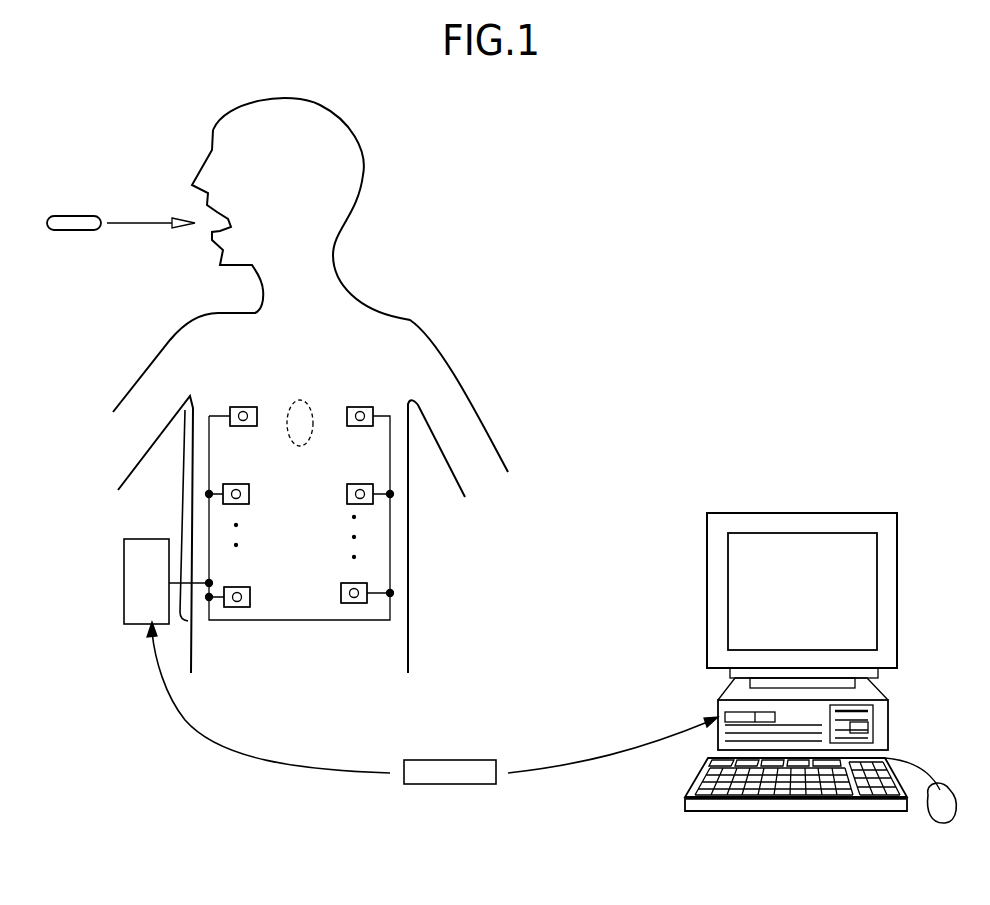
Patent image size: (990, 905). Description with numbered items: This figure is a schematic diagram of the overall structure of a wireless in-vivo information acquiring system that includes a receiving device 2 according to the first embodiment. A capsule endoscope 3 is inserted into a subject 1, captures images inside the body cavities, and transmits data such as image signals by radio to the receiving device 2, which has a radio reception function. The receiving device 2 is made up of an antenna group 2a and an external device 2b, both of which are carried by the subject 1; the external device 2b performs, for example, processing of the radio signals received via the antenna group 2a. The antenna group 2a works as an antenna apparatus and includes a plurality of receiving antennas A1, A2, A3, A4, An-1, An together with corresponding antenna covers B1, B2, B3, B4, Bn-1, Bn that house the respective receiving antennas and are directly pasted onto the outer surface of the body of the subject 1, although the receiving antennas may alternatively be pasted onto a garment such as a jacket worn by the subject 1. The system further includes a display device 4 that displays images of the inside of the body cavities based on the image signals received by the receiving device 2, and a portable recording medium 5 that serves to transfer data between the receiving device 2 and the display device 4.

The subject 1 is at (330, 115).
The receiving device 2 is at (53, 500).
The antenna group 2a is at (180, 518).
The external device 2b is at (124, 565).
The capsule endoscope 3 is at (78, 232).
The display device 4 is at (780, 512).
The portable recording medium 5 is at (462, 784).
The receiving antenna A1 is at (245, 408).
The receiving antenna A2 is at (360, 408).
The receiving antenna A3 is at (237, 485).
The receiving antenna A4 is at (360, 485).
The receiving antenna An-1 is at (239, 590).
The receiving antenna An is at (356, 585).
The antenna cover B1 is at (241, 408).
The antenna cover B2 is at (362, 406).
The antenna cover B3 is at (249, 494).
The antenna cover B4 is at (347, 494).
The antenna cover Bn-1 is at (250, 592).
The antenna cover Bn is at (341, 593).